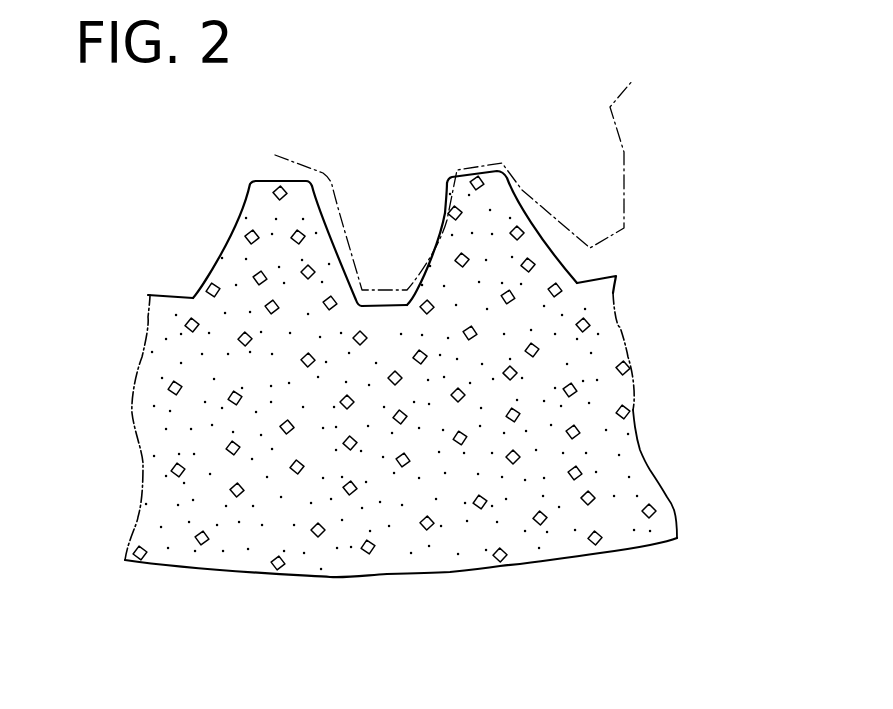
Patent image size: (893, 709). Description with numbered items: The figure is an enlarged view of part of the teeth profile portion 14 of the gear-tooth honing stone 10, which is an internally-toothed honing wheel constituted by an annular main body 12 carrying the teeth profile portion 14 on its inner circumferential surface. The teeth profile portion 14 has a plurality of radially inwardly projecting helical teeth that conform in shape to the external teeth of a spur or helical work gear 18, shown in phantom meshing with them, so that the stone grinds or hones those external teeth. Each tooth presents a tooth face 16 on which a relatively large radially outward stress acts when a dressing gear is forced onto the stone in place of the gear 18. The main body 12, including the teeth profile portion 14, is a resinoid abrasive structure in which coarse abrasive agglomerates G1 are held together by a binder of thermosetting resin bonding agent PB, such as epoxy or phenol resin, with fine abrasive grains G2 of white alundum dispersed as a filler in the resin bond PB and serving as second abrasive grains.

The gear-tooth honing stone 10 is at (644, 393).
The annular main body 12 is at (153, 435).
The teeth profile portion 14 is at (248, 217).
The tooth face 16 is at (443, 207).
The gear 18 is at (623, 152).
The thermosetting resin bonding agent PB is at (640, 456).
The abrasive agglomerates G1 is at (656, 513).
The abrasive grains G2 is at (628, 490).